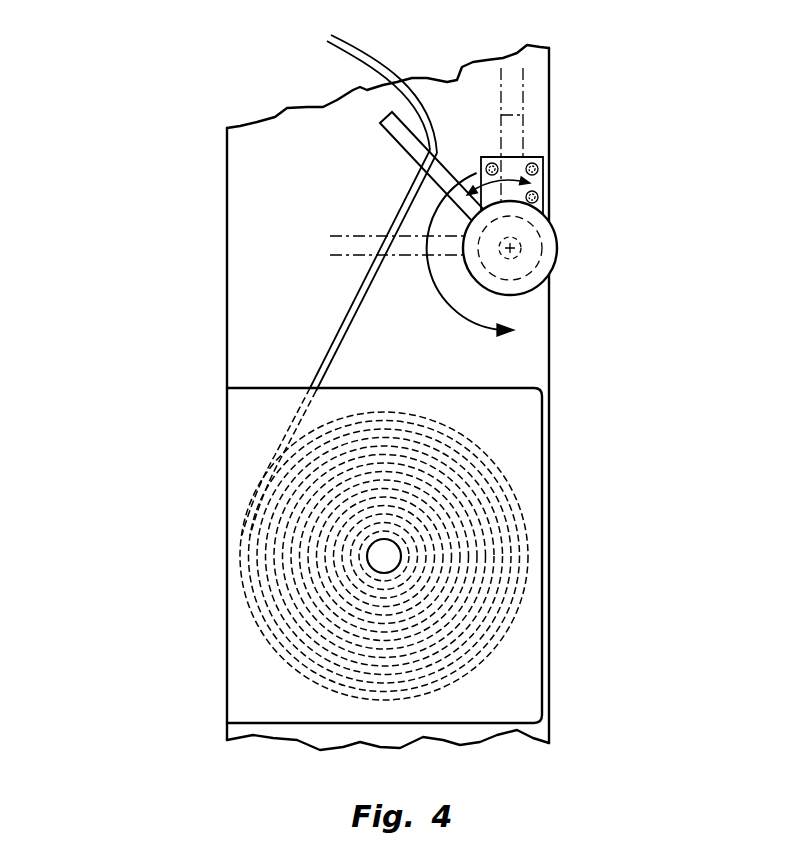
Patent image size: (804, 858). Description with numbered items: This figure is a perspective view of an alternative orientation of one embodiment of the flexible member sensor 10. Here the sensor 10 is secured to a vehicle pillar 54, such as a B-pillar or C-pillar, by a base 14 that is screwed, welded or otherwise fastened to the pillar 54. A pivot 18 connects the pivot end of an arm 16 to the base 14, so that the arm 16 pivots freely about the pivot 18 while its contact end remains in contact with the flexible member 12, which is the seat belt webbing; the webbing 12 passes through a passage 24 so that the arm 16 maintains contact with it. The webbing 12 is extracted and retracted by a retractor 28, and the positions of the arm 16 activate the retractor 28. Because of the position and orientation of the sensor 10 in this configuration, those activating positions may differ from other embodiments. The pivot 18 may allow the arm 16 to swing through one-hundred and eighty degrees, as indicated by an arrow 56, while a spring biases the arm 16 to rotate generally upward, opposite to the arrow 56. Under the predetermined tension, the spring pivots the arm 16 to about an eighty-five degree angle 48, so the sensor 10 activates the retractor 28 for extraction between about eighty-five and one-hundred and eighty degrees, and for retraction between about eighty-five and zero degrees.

The flexible member sensor 10 is at (517, 223).
The flexible member 12 is at (390, 62).
The base 14 is at (537, 182).
The arm 16 is at (437, 185).
The pivot 18 is at (535, 252).
The passage 24 is at (412, 162).
The retractor 28 is at (158, 505).
The eighty-five degree angle 48 is at (484, 165).
The vehicle pillar 54 is at (305, 320).
The arrow 56 is at (442, 295).